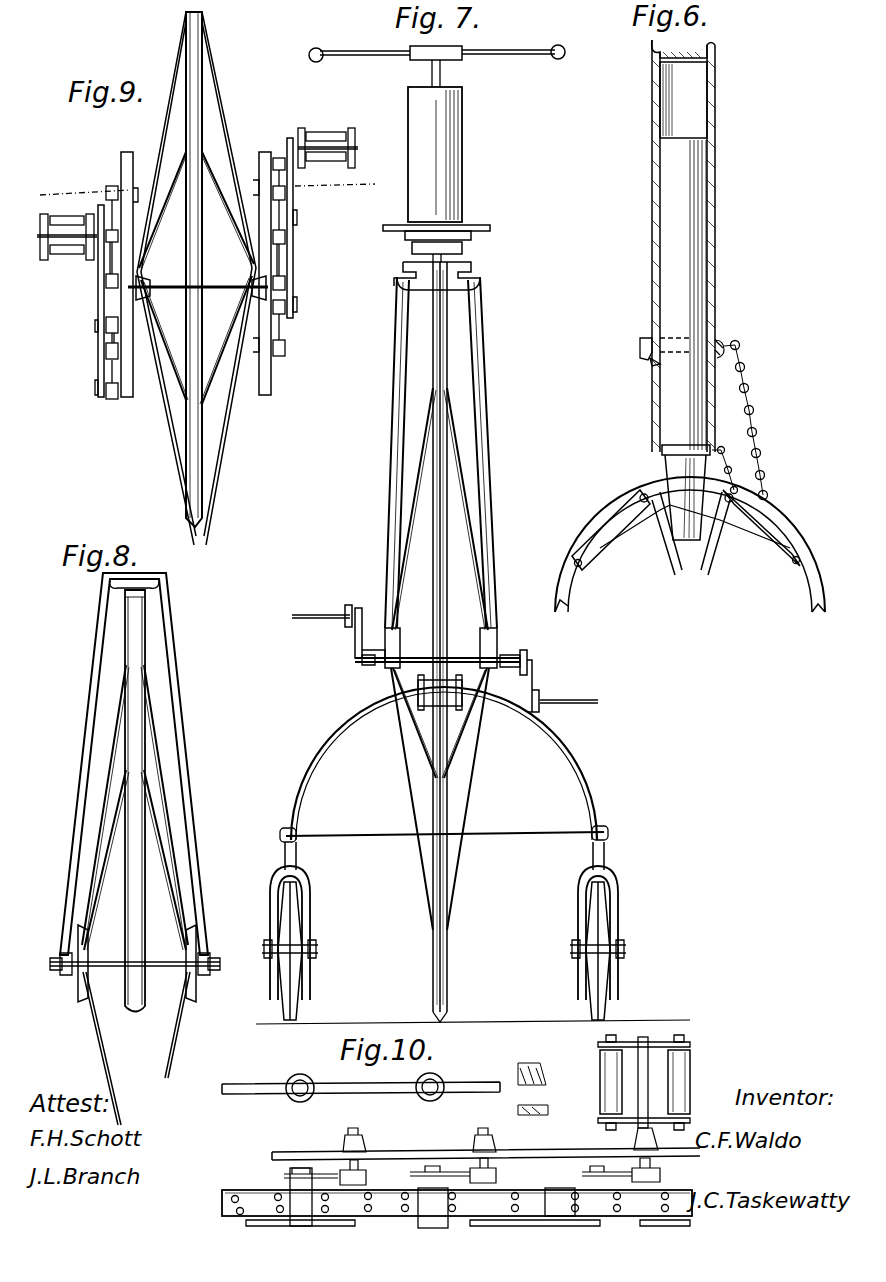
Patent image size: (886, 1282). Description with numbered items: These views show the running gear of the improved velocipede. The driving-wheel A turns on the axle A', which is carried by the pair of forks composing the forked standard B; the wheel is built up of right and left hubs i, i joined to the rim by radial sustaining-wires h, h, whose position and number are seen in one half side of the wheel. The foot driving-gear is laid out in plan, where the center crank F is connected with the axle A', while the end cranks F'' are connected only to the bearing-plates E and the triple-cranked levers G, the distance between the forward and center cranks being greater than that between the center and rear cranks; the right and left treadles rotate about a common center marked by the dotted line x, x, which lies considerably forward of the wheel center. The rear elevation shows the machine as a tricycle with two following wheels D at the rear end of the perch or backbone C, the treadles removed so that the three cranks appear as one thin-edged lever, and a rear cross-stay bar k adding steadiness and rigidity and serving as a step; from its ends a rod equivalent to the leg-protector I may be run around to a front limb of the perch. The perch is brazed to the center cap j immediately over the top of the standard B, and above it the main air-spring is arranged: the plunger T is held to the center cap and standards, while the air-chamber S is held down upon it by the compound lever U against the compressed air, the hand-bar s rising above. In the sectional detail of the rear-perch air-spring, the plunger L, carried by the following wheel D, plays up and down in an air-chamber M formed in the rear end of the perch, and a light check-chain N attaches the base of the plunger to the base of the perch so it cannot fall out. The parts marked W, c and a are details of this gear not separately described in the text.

In FIG. 9, the driving-wheel A is at (219, 269).
In FIG. 7, the driving-wheel A is at (473, 997).
In FIG. 8, the driving-wheel A is at (145, 802).
In FIG. 9, the axle A' is at (198, 258).
In FIG. 7, the axle A' is at (445, 658).
In FIG. 8, the axle A' is at (135, 983).
In FIG. 7, the forked standard B is at (396, 468).
In FIG. 8, the forked standard B is at (170, 712).
In FIG. 7, the perch or backbone C is at (448, 637).
In FIG. 6, the perch or backbone C is at (696, 239).
In FIG. 7, the following wheel D is at (300, 990).
In FIG. 6, the following wheel D is at (770, 528).
In FIG. 9, the bearing-plates E is at (105, 148).
In FIG. 10, the bearing-plates E is at (258, 1074).
In FIG. 9, the center crank F is at (194, 258).
In FIG. 10, the center crank F is at (500, 1156).
In FIG. 9, the end crank F'' is at (207, 292).
In FIG. 10, the end crank F'' is at (486, 1171).
In FIG. 9, the triple-cranked levers G is at (294, 216).
In FIG. 10, the triple-cranked levers G is at (400, 1152).
In FIG. 9, the radial sustaining-wires h is at (214, 128).
In FIG. 7, the radial sustaining-wires h is at (450, 446).
In FIG. 6, the radial sustaining-wires h is at (691, 544).
In FIG. 8, the radial sustaining-wires h is at (136, 895).
In FIG. 9, the hubs i is at (140, 282).
In FIG. 7, the hubs i is at (392, 656).
In FIG. 8, the hubs i is at (90, 954).
In FIG. 7, the center cap j is at (472, 266).
In FIG. 7, the rear cross-stay bar k is at (490, 834).
In FIG. 7, the hand-bar s is at (437, 54).
In FIG. 7, the air-chamber S is at (435, 154).
In FIG. 7, the plate W is at (470, 225).
In FIG. 7, the compound lever U is at (471, 232).
In FIG. 7, the plunger T is at (412, 250).
In FIG. 6, the plunger L is at (672, 203).
In FIG. 6, the air-chamber M is at (696, 85).
In FIG. 6, the leg-protector I is at (640, 338).
In FIG. 6, the check-chain N is at (745, 420).
In FIG. 6, the arm c is at (626, 548).
In FIG. 7, the shaft tip a is at (432, 998).
In FIG. 9, the line of common center x is at (206, 194).
In FIG. 10, the line of common center x is at (644, 1082).